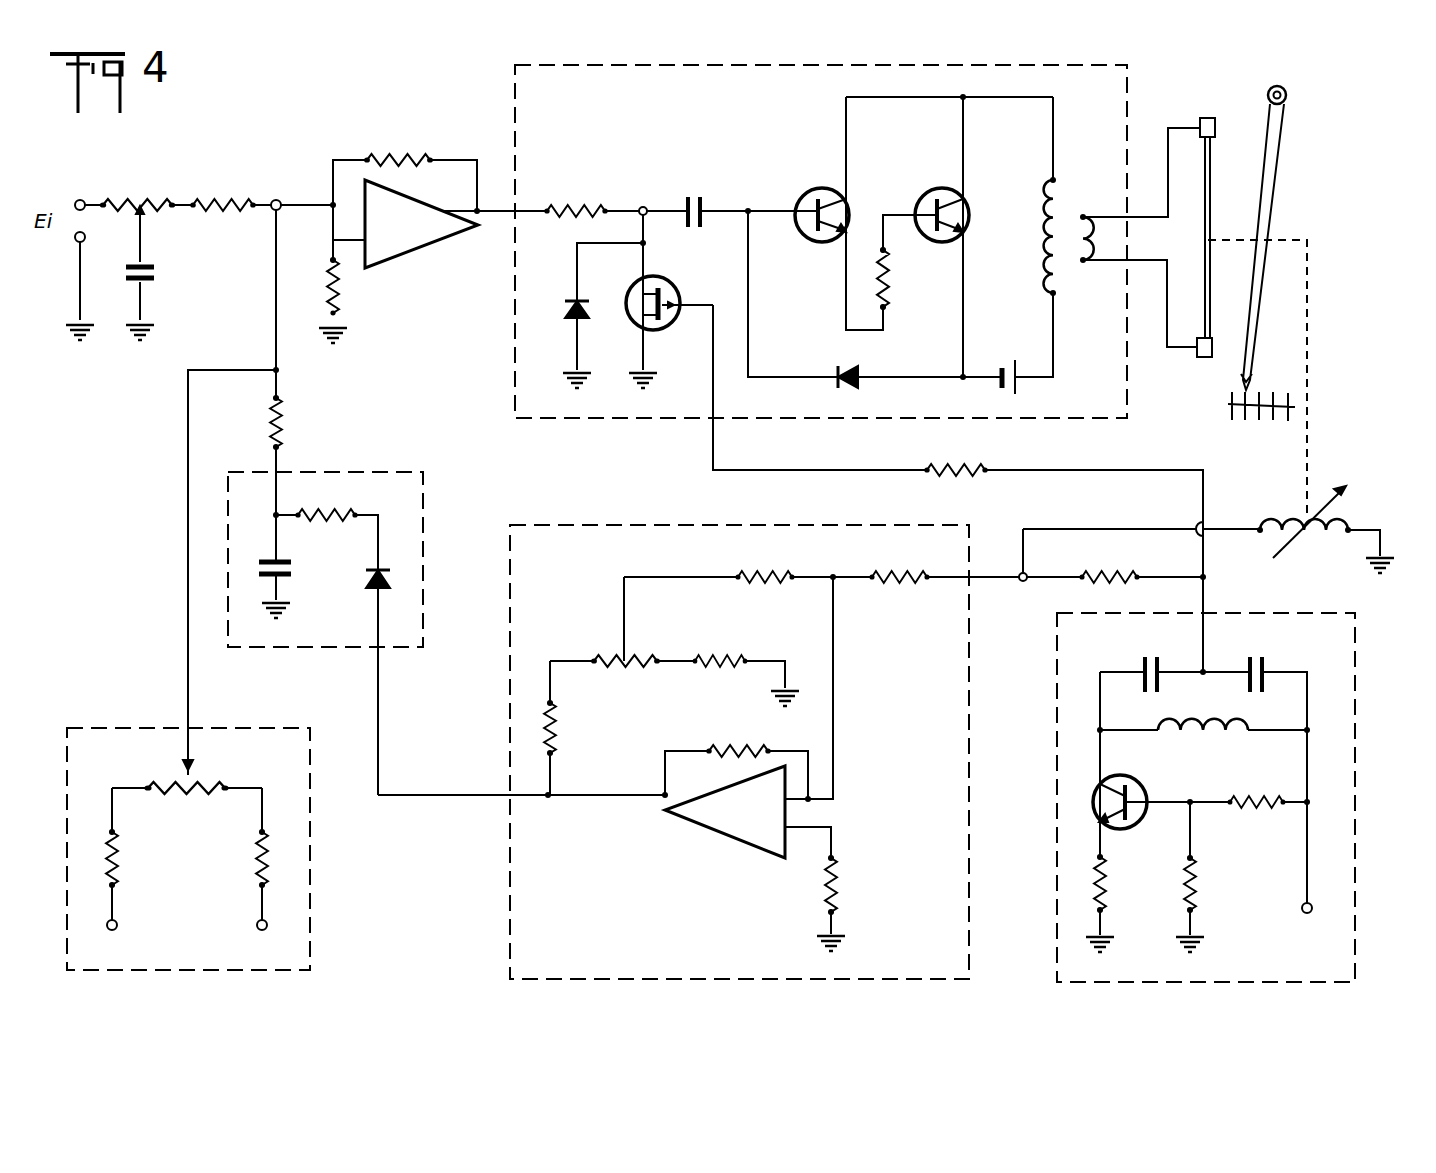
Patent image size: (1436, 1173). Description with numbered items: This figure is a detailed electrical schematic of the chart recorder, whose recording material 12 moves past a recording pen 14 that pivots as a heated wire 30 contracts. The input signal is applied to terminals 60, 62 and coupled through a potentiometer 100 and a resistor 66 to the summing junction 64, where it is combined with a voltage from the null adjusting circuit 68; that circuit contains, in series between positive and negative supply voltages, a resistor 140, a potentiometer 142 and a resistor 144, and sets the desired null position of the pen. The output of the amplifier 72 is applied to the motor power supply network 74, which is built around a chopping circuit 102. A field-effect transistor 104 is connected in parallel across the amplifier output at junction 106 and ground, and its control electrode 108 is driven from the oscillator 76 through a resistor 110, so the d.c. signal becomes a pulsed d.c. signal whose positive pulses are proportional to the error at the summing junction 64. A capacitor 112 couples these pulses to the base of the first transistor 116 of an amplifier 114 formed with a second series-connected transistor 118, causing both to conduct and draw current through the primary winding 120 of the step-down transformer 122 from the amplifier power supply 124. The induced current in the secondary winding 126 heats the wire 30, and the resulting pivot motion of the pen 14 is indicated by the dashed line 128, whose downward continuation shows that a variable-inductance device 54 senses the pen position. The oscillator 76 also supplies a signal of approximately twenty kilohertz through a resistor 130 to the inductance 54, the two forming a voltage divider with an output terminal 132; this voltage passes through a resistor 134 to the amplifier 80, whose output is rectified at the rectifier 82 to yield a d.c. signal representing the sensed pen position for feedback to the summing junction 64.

The recording material 12 is at (1228, 406).
The recording pen 14 is at (1262, 318).
The wire 30 is at (1210, 200).
The variable-inductance device 54 is at (1285, 511).
The terminal 60 is at (83, 244).
The terminal 62 is at (96, 189).
The summing junction 64 is at (276, 204).
The resistor 66 is at (221, 194).
The null adjusting circuit 68 is at (75, 690).
The amplifier 72 is at (411, 236).
The motor power supply network 74 is at (485, 80).
The oscillator 76 is at (1056, 690).
The amplifier 80 is at (500, 503).
The rectifier 82 is at (232, 440).
The potentiometer 100 is at (133, 192).
The chopping circuit 102 is at (711, 266).
The field-effect transistor 104 is at (627, 301).
The junction 106 is at (642, 207).
The control electrode 108 is at (676, 327).
The resistor 110 is at (942, 460).
The capacitor 112 is at (695, 195).
The amplifier 114 is at (931, 285).
The first transistor 116 is at (813, 190).
The transistor 118 is at (935, 193).
The primary winding 120 is at (1043, 229).
The step-down transformer 122 is at (1072, 206).
The amplifier power supply 124 is at (1007, 388).
The secondary winding 126 is at (1092, 258).
The dashed line 128 is at (1307, 368).
The resistor 130 is at (1120, 575).
The output terminal 132 is at (1022, 582).
The resistor 134 is at (897, 582).
The resistor 140 is at (257, 863).
The potentiometer 142 is at (176, 790).
The resistor 144 is at (120, 868).